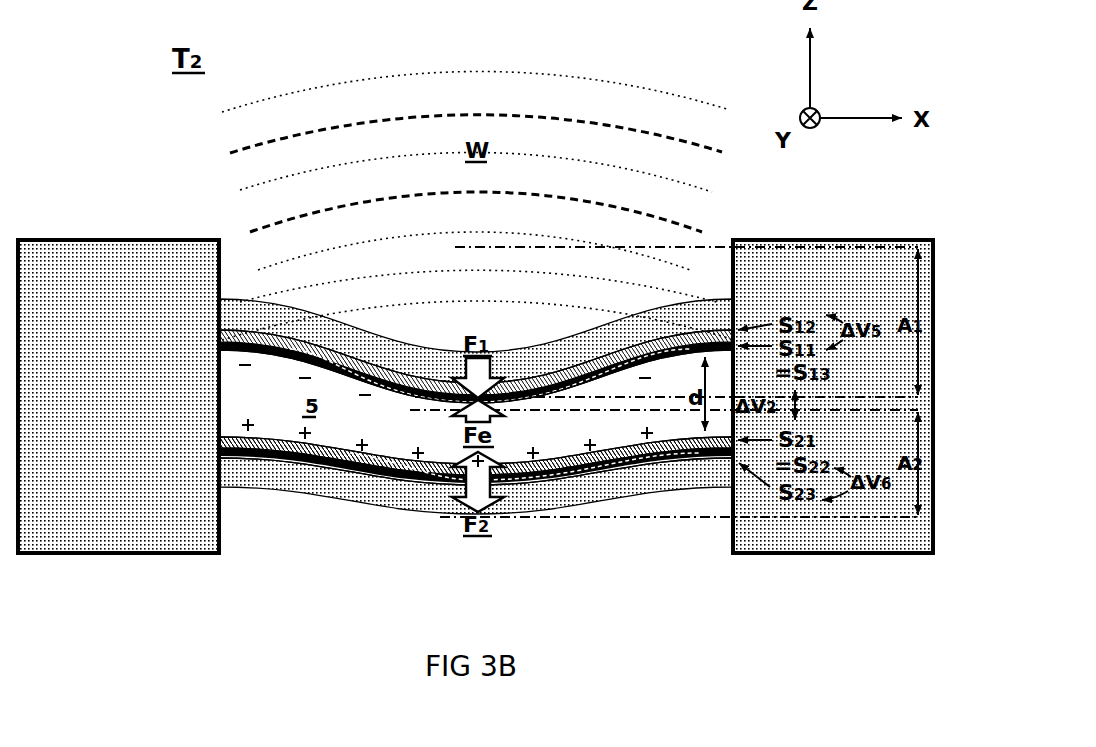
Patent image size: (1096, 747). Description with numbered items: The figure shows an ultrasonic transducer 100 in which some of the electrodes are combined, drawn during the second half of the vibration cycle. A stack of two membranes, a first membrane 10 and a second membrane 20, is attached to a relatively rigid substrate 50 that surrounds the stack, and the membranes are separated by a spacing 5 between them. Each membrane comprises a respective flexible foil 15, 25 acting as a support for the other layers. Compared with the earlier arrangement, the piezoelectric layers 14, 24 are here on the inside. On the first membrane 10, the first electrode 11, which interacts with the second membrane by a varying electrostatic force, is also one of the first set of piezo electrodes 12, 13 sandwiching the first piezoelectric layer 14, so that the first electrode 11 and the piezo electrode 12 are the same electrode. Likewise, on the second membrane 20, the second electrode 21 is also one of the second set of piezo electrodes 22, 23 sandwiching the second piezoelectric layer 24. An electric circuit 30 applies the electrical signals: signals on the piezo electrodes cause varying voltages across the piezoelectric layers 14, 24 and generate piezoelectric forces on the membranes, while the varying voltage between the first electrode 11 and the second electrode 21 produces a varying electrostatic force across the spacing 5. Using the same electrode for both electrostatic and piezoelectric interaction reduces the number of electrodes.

The ultrasonic transducer 100 is at (112, 129).
The substrate 50 is at (60, 276).
The electric circuit 30 is at (835, 233).
The first membrane 10 is at (409, 308).
The second membrane 20 is at (409, 504).
The flexible foil 15 is at (213, 313).
The piezo electrode 13 is at (215, 331).
The first piezoelectric layer 14 is at (215, 345).
The first electrode 11 is at (213, 353).
The piezo electrode 12 is at (409, 376).
The second electrode 21 is at (213, 435).
The piezo electrode 22 is at (409, 437).
The second piezoelectric layer 24 is at (215, 448).
The piezo electrode 23 is at (215, 462).
The flexible foil 25 is at (215, 477).
The spacing 5 is at (316, 417).